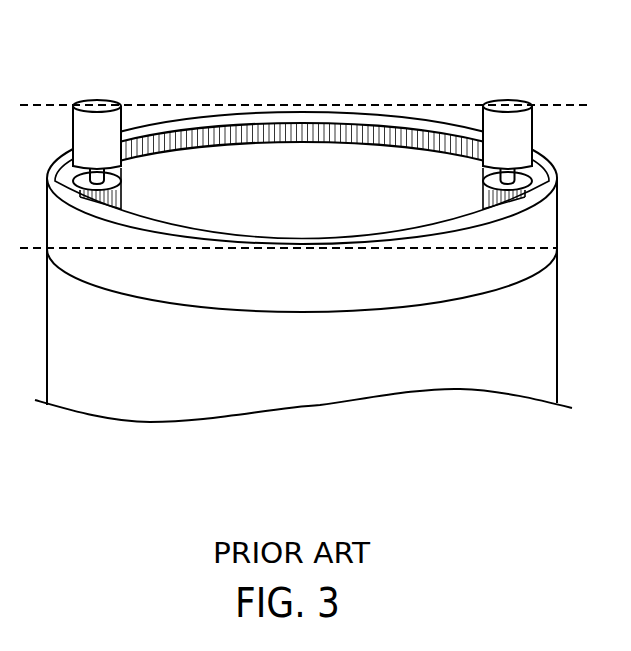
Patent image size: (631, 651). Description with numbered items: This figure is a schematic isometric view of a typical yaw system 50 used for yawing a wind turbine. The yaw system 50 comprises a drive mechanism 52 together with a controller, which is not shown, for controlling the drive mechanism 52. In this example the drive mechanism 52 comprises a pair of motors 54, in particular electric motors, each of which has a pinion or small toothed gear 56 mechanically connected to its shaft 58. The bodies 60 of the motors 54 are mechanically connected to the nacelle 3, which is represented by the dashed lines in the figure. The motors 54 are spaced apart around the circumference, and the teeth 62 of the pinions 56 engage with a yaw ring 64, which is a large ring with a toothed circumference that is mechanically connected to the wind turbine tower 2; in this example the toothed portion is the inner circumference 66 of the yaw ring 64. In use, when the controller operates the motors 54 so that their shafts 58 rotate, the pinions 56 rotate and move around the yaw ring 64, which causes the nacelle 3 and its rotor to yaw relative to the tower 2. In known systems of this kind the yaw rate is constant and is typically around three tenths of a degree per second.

The wind turbine tower 2 is at (548, 342).
The nacelle 3 is at (560, 250).
The yaw system 50 is at (324, 78).
The drive mechanism 52 is at (93, 78).
The motors 54 is at (114, 117).
The pinion 56 is at (113, 183).
The shaft 58 is at (77, 181).
The bodies of the motors 60 is at (80, 117).
The teeth 62 is at (122, 197).
The yaw ring 64 is at (343, 297).
The inner circumference 66 is at (227, 130).